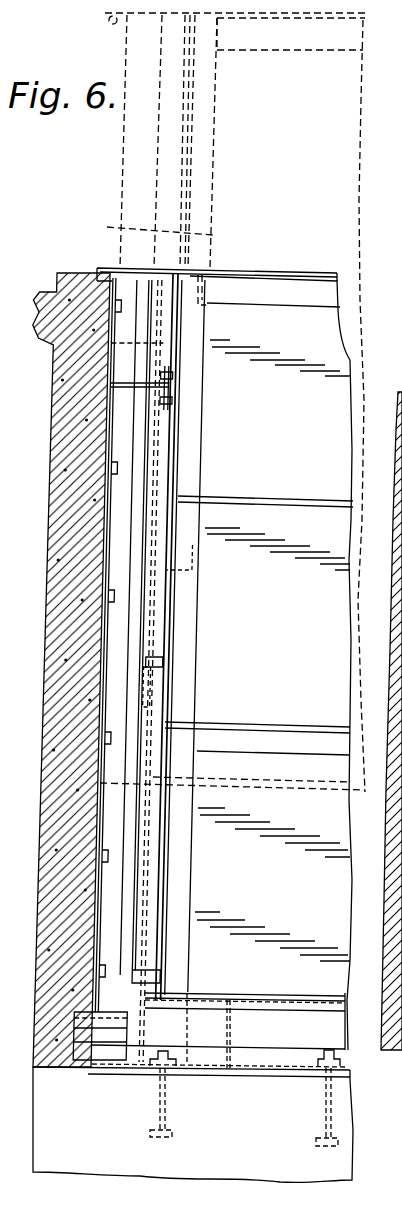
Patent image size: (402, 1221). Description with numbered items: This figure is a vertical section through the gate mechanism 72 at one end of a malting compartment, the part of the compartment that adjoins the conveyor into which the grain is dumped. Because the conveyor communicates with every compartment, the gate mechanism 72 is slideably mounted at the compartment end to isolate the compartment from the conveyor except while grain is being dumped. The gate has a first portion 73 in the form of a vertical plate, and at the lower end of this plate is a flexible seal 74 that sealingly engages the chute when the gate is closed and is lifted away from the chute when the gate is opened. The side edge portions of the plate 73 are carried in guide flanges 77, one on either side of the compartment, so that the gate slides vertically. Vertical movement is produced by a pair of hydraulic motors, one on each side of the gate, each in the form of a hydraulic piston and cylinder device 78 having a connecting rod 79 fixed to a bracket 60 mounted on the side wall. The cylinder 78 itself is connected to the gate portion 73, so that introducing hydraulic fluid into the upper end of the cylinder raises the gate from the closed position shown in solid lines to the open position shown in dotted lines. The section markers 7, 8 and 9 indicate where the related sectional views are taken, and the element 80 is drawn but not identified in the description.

The bracket 60 is at (322, 795).
The gate mechanism 72 is at (262, 290).
The first portion 73 is at (306, 708).
The flexible seal 74 is at (268, 1028).
The guide flanges 77 is at (120, 630).
The hydraulic piston and cylinder device 78 is at (157, 872).
The connecting rod 79 is at (165, 477).
The anchor bracket 80 is at (158, 400).
The section line 7- 7 is at (38, 634).
The section line 8- 8 is at (260, 236).
The section line 9- 9 is at (163, 763).